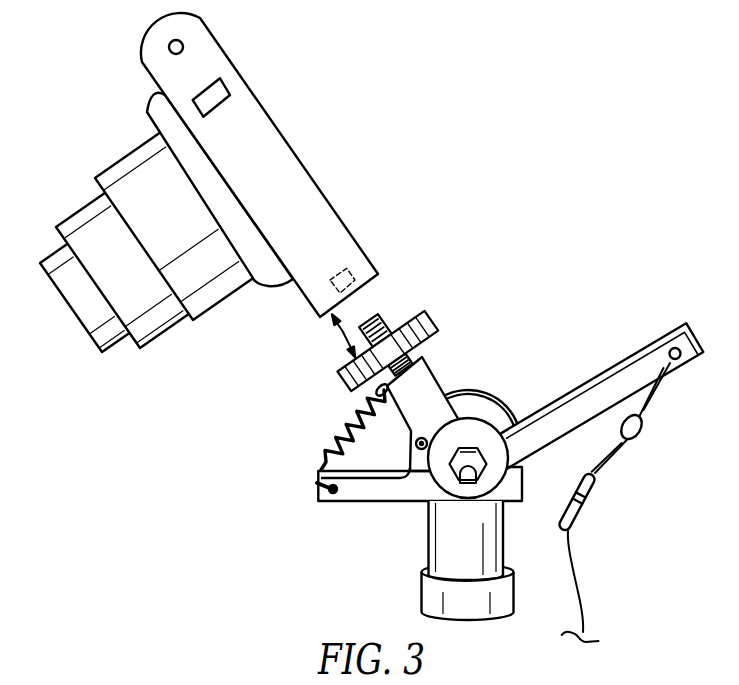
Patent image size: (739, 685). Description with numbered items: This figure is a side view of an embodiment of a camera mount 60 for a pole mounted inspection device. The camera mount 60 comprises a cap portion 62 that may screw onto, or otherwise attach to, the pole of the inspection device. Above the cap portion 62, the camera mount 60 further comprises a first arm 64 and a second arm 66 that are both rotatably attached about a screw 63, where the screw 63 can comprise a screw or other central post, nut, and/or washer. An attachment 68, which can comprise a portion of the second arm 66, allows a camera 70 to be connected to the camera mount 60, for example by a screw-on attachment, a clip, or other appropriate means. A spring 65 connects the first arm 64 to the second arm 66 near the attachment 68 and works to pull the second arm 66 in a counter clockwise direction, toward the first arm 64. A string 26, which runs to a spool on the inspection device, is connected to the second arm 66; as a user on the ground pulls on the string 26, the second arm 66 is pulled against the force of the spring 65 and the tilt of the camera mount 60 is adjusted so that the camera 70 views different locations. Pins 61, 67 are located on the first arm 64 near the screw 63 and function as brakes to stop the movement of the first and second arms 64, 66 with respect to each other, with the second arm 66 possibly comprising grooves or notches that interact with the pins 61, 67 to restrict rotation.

The camera 70 is at (336, 213).
The attachment 68 is at (433, 316).
The pin 67 is at (498, 419).
The second arm 66 is at (643, 349).
The spring 65 is at (341, 428).
The pin 61 is at (416, 450).
The camera mount 60 is at (242, 498).
The first arm 64 is at (362, 503).
The screw 63 is at (444, 478).
The cap portion 62 is at (427, 547).
The string 26 is at (580, 573).